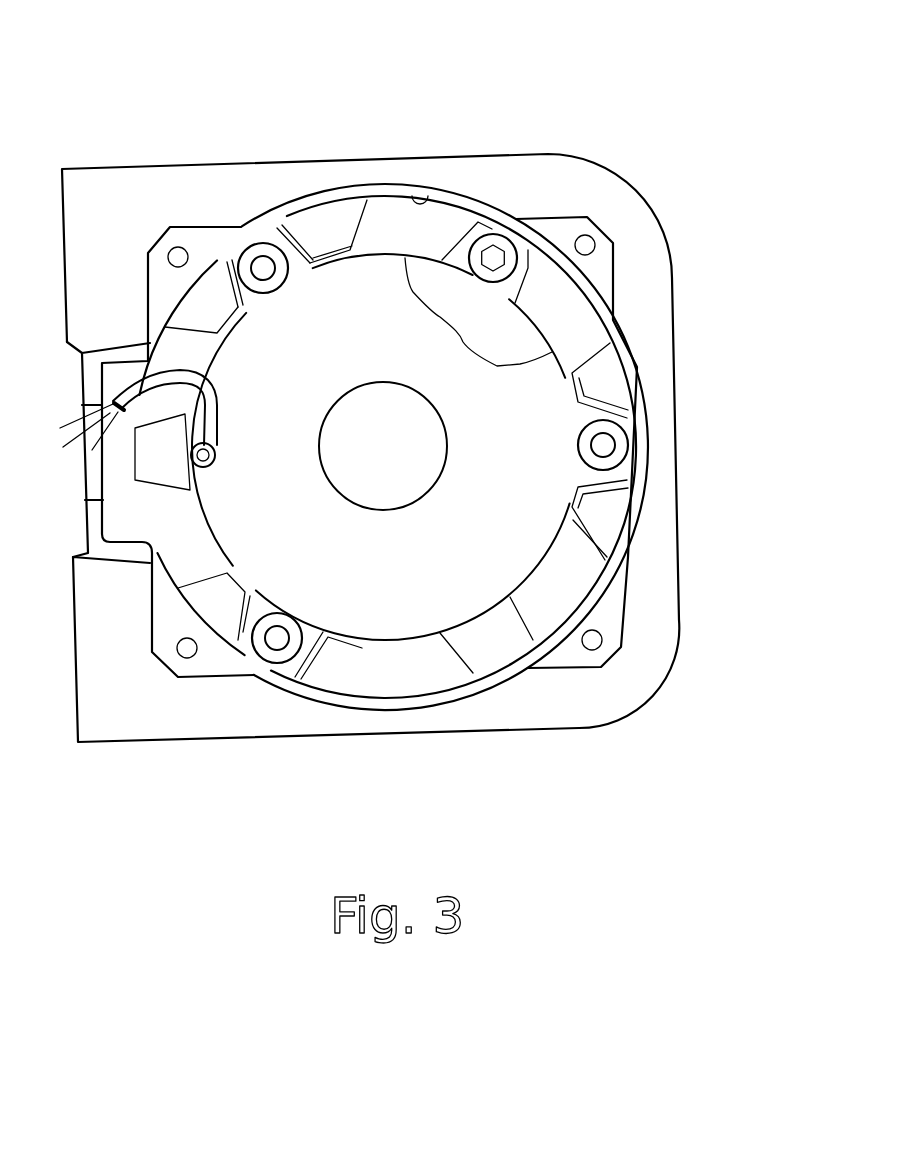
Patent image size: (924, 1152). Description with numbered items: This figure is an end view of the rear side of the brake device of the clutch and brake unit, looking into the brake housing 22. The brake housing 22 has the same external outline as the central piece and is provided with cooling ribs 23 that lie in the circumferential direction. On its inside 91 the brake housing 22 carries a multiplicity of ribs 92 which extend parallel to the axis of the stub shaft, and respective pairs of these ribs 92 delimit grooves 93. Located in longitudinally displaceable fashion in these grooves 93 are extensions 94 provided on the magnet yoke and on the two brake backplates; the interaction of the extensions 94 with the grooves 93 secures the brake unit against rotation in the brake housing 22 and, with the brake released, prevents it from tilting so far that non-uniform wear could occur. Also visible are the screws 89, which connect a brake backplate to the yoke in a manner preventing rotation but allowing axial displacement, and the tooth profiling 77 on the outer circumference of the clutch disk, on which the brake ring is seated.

The brake housing 22 is at (678, 293).
The cooling ribs 23 is at (558, 189).
The tooth profiling 77 is at (527, 506).
The screws 89 is at (508, 246).
The inside 91 is at (425, 202).
The ribs 92 is at (216, 288).
The grooves 93 is at (281, 226).
The extensions 94 is at (234, 251).